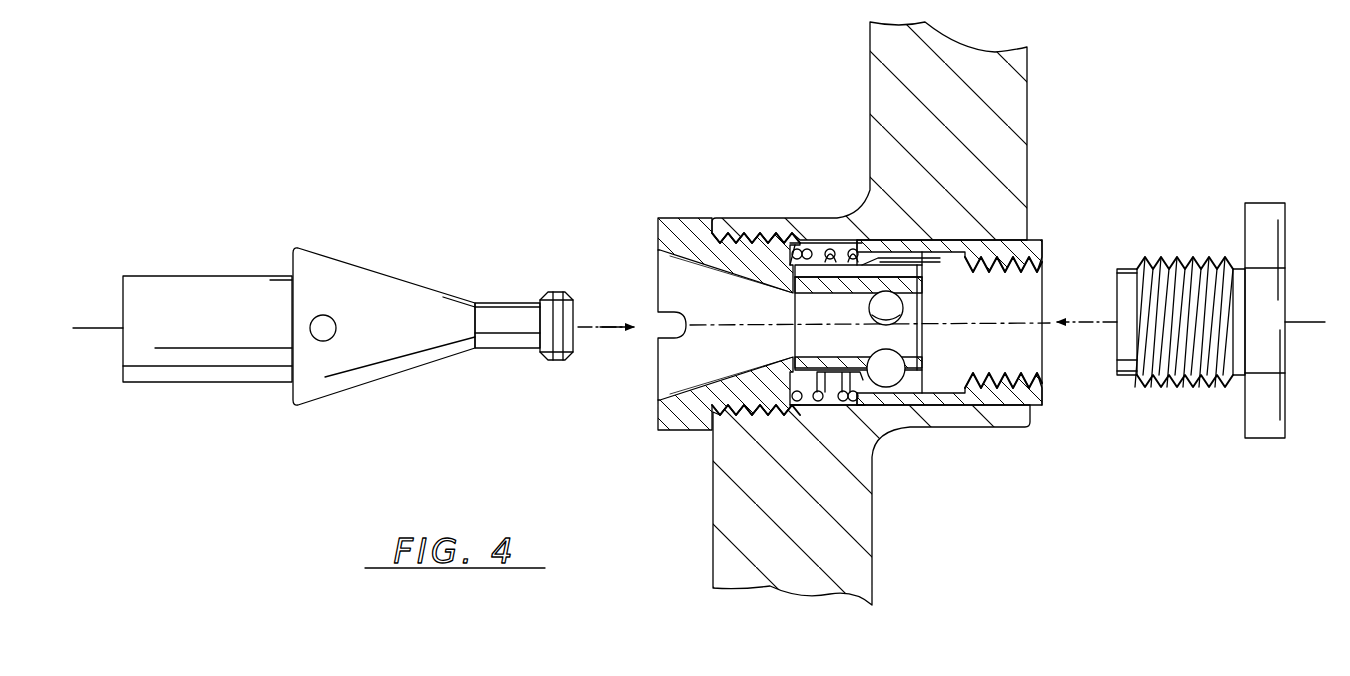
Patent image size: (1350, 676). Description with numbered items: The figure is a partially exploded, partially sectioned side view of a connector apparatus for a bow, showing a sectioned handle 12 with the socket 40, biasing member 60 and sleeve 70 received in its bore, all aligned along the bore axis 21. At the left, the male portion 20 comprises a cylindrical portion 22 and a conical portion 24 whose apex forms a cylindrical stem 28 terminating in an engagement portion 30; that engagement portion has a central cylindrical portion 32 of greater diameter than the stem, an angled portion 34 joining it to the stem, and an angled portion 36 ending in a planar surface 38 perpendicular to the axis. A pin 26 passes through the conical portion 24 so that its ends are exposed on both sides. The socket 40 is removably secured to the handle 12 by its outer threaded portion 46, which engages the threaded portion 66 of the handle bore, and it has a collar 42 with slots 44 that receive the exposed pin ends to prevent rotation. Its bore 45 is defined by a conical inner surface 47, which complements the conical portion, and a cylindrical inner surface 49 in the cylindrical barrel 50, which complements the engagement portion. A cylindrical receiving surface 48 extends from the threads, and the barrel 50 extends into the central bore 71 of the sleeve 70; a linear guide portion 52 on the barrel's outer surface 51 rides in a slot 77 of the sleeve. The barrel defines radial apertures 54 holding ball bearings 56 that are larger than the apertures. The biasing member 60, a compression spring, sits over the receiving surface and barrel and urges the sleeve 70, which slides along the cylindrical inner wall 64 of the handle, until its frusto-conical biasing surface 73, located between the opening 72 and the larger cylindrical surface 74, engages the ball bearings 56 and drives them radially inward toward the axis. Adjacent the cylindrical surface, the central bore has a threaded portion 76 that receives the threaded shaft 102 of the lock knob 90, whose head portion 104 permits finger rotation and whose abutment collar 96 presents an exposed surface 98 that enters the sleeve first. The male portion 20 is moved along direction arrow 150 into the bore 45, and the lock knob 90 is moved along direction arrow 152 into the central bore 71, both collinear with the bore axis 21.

The handle 12 is at (975, 135).
The male portion 20 is at (368, 350).
The bore axis 21 is at (90, 330).
The cylindrical portion 22 is at (205, 308).
The conical portion 24 is at (370, 268).
The pin 26 is at (337, 329).
The cylindrical stem 28 is at (510, 333).
The engagement portion 30 is at (559, 364).
The central cylindrical portion 32 is at (555, 300).
The angled portion 34 is at (548, 300).
The angled portion 36 is at (574, 300).
The planar surface 38 is at (574, 340).
The socket 40 is at (816, 313).
The collar 42 is at (680, 432).
The slots 44 is at (668, 336).
The bore 45 is at (674, 299).
The outer threaded portion 46 is at (742, 240).
The conical inner surface 47 is at (680, 395).
The cylindrical receiving surface 48 is at (796, 418).
The cylindrical inner surface 49 is at (796, 338).
The cylindrical barrel 50 is at (878, 326).
The outer surface 51 is at (935, 378).
The linear guide portion 52 is at (905, 245).
The apertures 54 is at (870, 307).
The ball bearings 56 is at (903, 364).
The biasing member 60 is at (882, 406).
The cylindrical inner wall 64 is at (826, 250).
The threaded portion 66 is at (770, 238).
The sleeve 70 is at (986, 322).
The central bore 71 is at (988, 300).
The opening 72 is at (836, 380).
The biasing surface 73 is at (905, 402).
The cylindrical surface 74 is at (956, 262).
The threaded portion 76 is at (1017, 375).
The slot 77 is at (876, 260).
The lock knob 90 is at (1225, 346).
The abutment collar 96 is at (1127, 380).
The exposed surface 98 is at (1043, 300).
The shaft 102 is at (1185, 254).
The head portion 104 is at (1288, 415).
The direction arrow 150 is at (612, 324).
The direction arrow 152 is at (1070, 328).